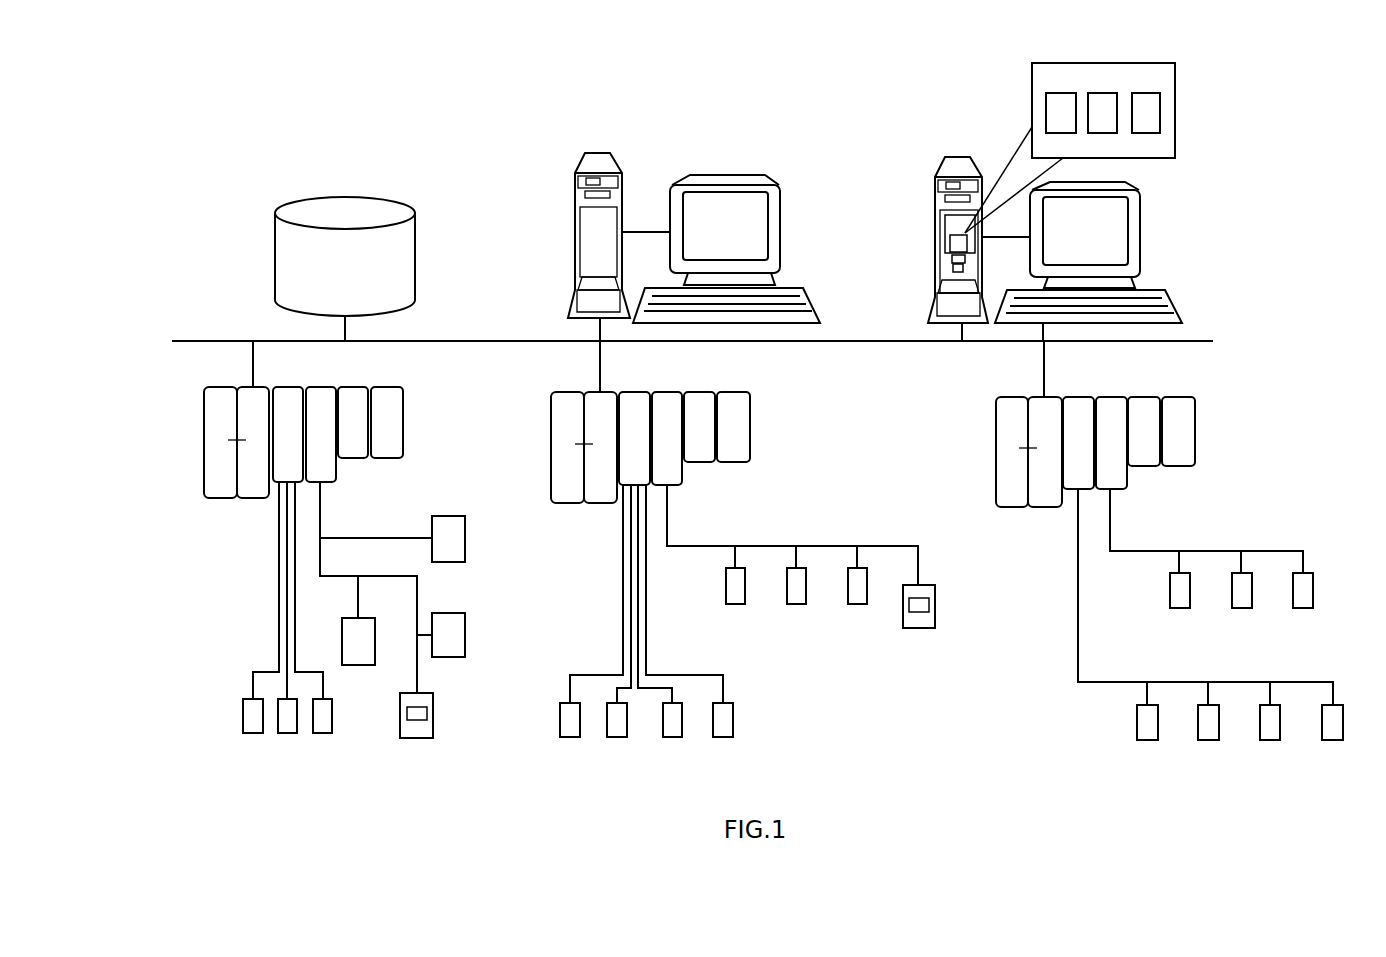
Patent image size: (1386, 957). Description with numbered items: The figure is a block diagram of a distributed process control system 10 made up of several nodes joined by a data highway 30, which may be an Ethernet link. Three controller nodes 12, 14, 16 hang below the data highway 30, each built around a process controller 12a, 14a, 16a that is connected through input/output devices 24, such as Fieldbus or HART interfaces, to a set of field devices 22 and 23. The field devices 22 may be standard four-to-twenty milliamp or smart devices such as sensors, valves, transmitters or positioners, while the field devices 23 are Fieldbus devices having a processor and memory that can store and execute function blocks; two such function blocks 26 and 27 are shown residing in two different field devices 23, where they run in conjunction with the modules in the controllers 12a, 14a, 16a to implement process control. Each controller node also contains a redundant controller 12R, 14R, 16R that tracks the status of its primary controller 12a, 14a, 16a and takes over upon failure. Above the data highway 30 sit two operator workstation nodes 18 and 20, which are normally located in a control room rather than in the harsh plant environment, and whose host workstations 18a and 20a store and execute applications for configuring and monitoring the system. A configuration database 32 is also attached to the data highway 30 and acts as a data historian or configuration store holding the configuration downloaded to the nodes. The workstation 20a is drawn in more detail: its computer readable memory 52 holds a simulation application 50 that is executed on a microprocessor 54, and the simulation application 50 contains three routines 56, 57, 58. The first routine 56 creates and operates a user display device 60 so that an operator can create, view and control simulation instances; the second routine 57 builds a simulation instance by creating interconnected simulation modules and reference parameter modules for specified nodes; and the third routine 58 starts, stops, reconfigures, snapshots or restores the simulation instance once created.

The distributed process control system 10 is at (246, 124).
The controller node 12 is at (285, 593).
The process controller 12a is at (250, 400).
The redundant controller 12R is at (204, 410).
The controller node 14 is at (703, 595).
The process controller 14a is at (597, 403).
The redundant controller 14R is at (551, 415).
The controller node 16 is at (1132, 598).
The process controller 16a is at (1042, 407).
The redundant controller 16R is at (996, 420).
The operator workstation node 18 is at (694, 207).
The host workstation 18a is at (591, 153).
The operator workstation node 20 is at (1040, 187).
The host workstation 20a is at (955, 157).
The field device 22 is at (255, 735).
The Fieldbus field device 23 is at (465, 542).
The input/output device 24 is at (289, 407).
The function block 26 is at (427, 717).
The function block 27 is at (929, 607).
The data highway 30 is at (452, 338).
The configuration database 32 is at (417, 241).
The simulation application 50 is at (950, 244).
The computer readable memory 52 is at (945, 222).
The microprocessor 54 is at (953, 265).
The first routine 56 is at (1061, 93).
The second routine 57 is at (1108, 93).
The third routine 58 is at (1155, 93).
The user display device 60 is at (1140, 225).